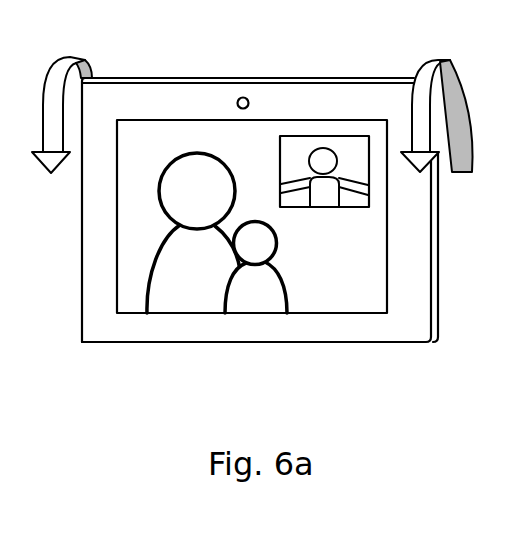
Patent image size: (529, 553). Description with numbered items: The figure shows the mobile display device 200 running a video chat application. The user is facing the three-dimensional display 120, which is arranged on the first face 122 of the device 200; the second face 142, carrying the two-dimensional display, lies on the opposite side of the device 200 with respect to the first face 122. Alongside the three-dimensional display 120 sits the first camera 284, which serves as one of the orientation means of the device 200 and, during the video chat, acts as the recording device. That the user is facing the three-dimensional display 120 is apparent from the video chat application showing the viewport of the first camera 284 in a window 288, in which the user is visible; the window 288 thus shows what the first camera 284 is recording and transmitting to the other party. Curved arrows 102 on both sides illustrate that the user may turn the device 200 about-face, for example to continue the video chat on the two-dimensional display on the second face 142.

The mobile display device 200 is at (134, 58).
The curved arrows 102 is at (55, 183).
The 3D display 120 is at (345, 316).
The first face 122 is at (207, 105).
The second face 142 is at (295, 77).
The first camera 284 is at (258, 105).
The window 288 is at (318, 208).